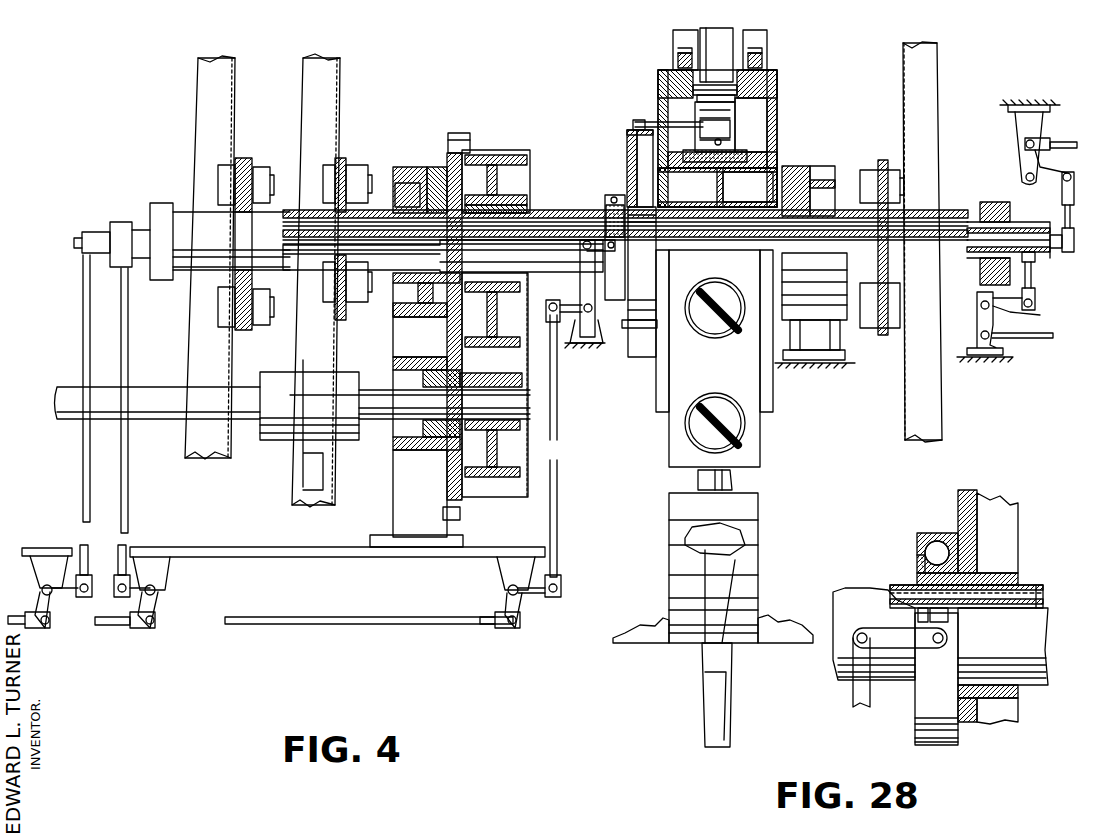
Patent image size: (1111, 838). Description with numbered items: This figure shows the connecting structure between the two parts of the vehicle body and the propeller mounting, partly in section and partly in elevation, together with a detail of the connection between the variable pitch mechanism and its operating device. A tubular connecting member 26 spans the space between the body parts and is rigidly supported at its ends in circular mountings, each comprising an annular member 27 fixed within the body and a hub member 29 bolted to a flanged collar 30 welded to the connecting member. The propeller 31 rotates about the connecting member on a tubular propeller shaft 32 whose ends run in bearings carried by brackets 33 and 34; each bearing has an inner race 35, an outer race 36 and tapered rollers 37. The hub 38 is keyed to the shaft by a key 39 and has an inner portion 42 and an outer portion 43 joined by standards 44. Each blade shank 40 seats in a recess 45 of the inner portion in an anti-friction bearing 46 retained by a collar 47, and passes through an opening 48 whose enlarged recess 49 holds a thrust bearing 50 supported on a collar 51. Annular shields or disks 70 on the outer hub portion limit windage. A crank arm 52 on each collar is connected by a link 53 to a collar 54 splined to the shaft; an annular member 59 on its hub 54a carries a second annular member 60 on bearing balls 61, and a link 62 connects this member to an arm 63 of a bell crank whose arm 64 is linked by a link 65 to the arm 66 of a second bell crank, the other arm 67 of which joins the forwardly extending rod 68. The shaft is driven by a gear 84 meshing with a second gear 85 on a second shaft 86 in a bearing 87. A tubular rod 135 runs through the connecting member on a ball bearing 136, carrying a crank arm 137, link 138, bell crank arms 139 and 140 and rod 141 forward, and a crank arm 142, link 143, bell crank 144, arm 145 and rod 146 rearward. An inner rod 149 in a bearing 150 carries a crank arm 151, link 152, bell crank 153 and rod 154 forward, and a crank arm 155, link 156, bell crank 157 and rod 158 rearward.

In FIG. 4, the connecting member 26 is at (290, 210).
In FIG. 28, the connecting member 26 is at (982, 610).
In FIG. 4, the annular member 27 is at (307, 100).
In FIG. 4, the hub member 29 is at (241, 162).
In FIG. 4, the flanged collar 30 is at (256, 168).
In FIG. 4, the propeller 31 is at (661, 492).
In FIG. 4, the propeller shaft 32 is at (561, 210).
In FIG. 28, the propeller shaft 32 is at (1028, 686).
In FIG. 4, the bracket 33 is at (432, 170).
In FIG. 4, the bracket 34 is at (842, 170).
In FIG. 4, the inner race 35 is at (843, 162).
In FIG. 4, the outer race 36 is at (450, 140).
In FIG. 4, the tapered rollers 37 is at (433, 168).
In FIG. 4, the hub 38 is at (798, 106).
In FIG. 4, the key 39 is at (733, 195).
In FIG. 28, the key 39 is at (1043, 590).
In FIG. 4, the shank 40 is at (673, 35).
In FIG. 4, the inner portion of the hub 42 is at (779, 160).
In FIG. 4, the outer portion of the hub 43 is at (778, 82).
In FIG. 4, the connecting members or standards 44 is at (768, 126).
In FIG. 4, the recess 45 is at (717, 187).
In FIG. 4, the anti-friction bearing 46 is at (630, 151).
In FIG. 4, the collar 47 is at (705, 136).
In FIG. 4, the opening 48 is at (660, 79).
In FIG. 4, the recess 49 is at (660, 93).
In FIG. 4, the anti-friction thrust bearing 50 is at (737, 103).
In FIG. 4, the collar 51 is at (735, 122).
In FIG. 4, the crank arm 52 is at (717, 159).
In FIG. 4, the link 53 is at (668, 122).
In FIG. 4, the collar 54 is at (632, 360).
In FIG. 28, the collar 54 is at (978, 557).
In FIG. 4, the hub of the collar 54a is at (605, 200).
In FIG. 28, the hub of the collar 54a is at (918, 556).
In FIG. 28, the annular member 59 is at (922, 570).
In FIG. 4, the second annular member 60 is at (597, 312).
In FIG. 28, the second annular member 60 is at (950, 532).
In FIG. 4, the bearing balls 61 is at (614, 196).
In FIG. 28, the bearing balls 61 is at (925, 546).
In FIG. 4, the link 62 is at (624, 260).
In FIG. 28, the link 62 is at (890, 631).
In FIG. 4, the arm of the bell crank 63 is at (580, 249).
In FIG. 28, the arm of the bell crank 63 is at (853, 694).
In FIG. 4, the arm of the bell crank 64 is at (572, 305).
In FIG. 4, the link 65 is at (558, 428).
In FIG. 4, the arm of the second bell crank 66 is at (540, 597).
In FIG. 4, the arm of the second bell crank 67 is at (520, 617).
In FIG. 4, the rod 68 is at (425, 629).
In FIG. 4, the annular shields or disks 70 is at (700, 48).
In FIG. 4, the gear 84 is at (512, 162).
In FIG. 4, the second gear 85 is at (522, 386).
In FIG. 4, the second shaft 86 is at (373, 421).
In FIG. 4, the bearing 87 is at (428, 410).
In FIG. 4, the tubular rod 135 is at (745, 256).
In FIG. 4, the ball bearing 136 is at (1010, 214).
In FIG. 4, the crank arm 137 is at (147, 210).
In FIG. 4, the link 138 is at (128, 334).
In FIG. 4, the arm of the bell crank 139 is at (150, 586).
In FIG. 4, the arm of the bell crank 140 is at (158, 611).
In FIG. 4, the rod 141 is at (120, 627).
In FIG. 4, the crank arm 142 is at (1035, 278).
In FIG. 4, the link 143 is at (1038, 302).
In FIG. 4, the bell crank 144 is at (1015, 316).
In FIG. 4, the arm of the bell crank 145 is at (980, 296).
In FIG. 4, the rod 146 is at (1025, 341).
In FIG. 4, the rod 149 is at (715, 357).
In FIG. 4, the bearing 150 is at (1036, 262).
In FIG. 4, the crank arm 151 is at (106, 220).
In FIG. 4, the link 152 is at (82, 326).
In FIG. 4, the bell crank 153 is at (50, 611).
In FIG. 4, the rod 154 is at (28, 592).
In FIG. 4, the crank arm 155 is at (1048, 256).
In FIG. 4, the link 156 is at (1074, 214).
In FIG. 4, the bell crank 157 is at (1044, 165).
In FIG. 4, the rod 158 is at (1063, 142).